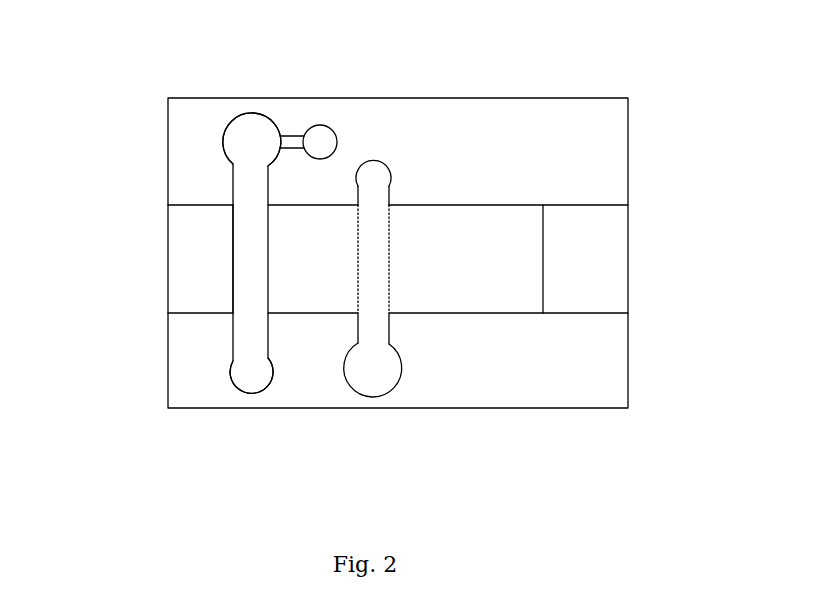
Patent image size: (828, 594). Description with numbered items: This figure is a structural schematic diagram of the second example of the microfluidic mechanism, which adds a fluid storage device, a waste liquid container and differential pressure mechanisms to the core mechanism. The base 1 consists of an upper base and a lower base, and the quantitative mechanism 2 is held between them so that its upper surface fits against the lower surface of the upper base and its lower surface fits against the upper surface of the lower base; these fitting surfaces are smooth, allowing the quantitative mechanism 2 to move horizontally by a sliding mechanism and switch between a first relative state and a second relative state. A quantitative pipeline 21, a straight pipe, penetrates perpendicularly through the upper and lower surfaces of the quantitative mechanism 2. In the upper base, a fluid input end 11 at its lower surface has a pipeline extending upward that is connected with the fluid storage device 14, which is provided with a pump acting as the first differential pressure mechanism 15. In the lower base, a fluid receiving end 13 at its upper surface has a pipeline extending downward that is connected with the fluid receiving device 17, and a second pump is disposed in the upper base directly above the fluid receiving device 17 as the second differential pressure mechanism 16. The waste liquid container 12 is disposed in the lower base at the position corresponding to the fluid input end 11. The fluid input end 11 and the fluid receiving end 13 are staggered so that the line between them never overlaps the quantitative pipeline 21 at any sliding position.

The base 1 is at (504, 127).
The quantitative mechanism 2 is at (541, 254).
The fluid input end 11 is at (233, 179).
The waste liquid container 12 is at (243, 403).
The fluid receiving end 13 is at (384, 343).
The fluid storage device 14 is at (256, 105).
The first differential pressure mechanism 15 is at (327, 108).
The second differential pressure mechanism 16 is at (386, 151).
The fluid receiving device 17 is at (360, 408).
The quantitative pipeline 21 is at (135, 278).